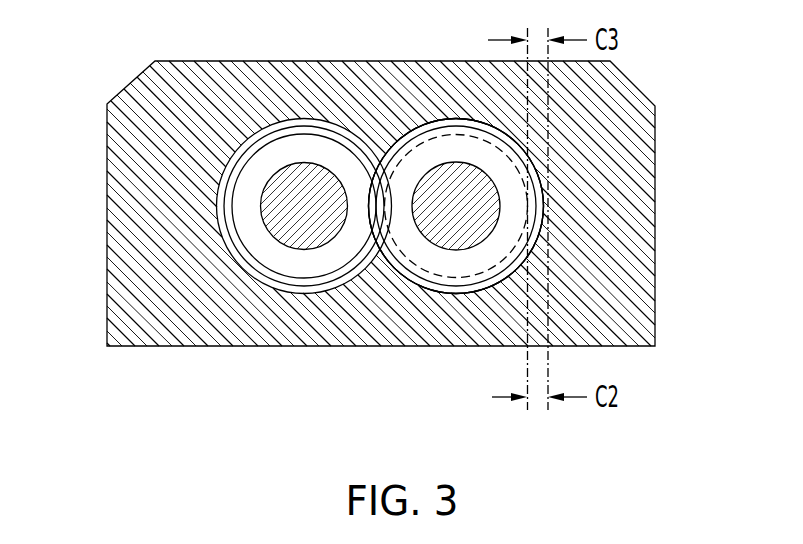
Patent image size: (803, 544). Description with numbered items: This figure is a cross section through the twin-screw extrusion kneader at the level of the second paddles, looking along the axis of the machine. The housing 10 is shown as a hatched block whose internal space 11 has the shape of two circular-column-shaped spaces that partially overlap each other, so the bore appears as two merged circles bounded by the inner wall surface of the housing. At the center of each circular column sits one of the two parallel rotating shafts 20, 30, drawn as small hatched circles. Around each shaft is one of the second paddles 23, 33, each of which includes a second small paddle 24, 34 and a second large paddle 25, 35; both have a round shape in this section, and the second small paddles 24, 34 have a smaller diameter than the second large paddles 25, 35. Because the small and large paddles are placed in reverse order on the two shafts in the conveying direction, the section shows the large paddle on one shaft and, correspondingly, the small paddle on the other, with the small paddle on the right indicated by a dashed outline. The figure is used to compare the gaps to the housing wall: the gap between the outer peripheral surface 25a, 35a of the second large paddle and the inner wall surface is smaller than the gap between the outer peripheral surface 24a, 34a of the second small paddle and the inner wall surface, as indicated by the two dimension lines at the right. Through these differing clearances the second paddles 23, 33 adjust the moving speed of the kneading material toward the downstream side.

The housing 10 is at (628, 95).
The internal space 11 is at (478, 125).
The rotating shaft 20 is at (438, 228).
The second paddle 23 is at (454, 236).
The second small paddle 24 is at (451, 208).
The outer peripheral surface 24a is at (440, 135).
The second large paddle 25 is at (443, 287).
The outer peripheral surface 25a is at (545, 208).
The rotating shaft 30 is at (298, 230).
The second paddle 33 is at (300, 235).
The second small paddle 34 is at (298, 204).
The outer peripheral surface 34a is at (320, 133).
The second large paddle 35 is at (304, 204).
The outer peripheral surface 35a is at (270, 128).